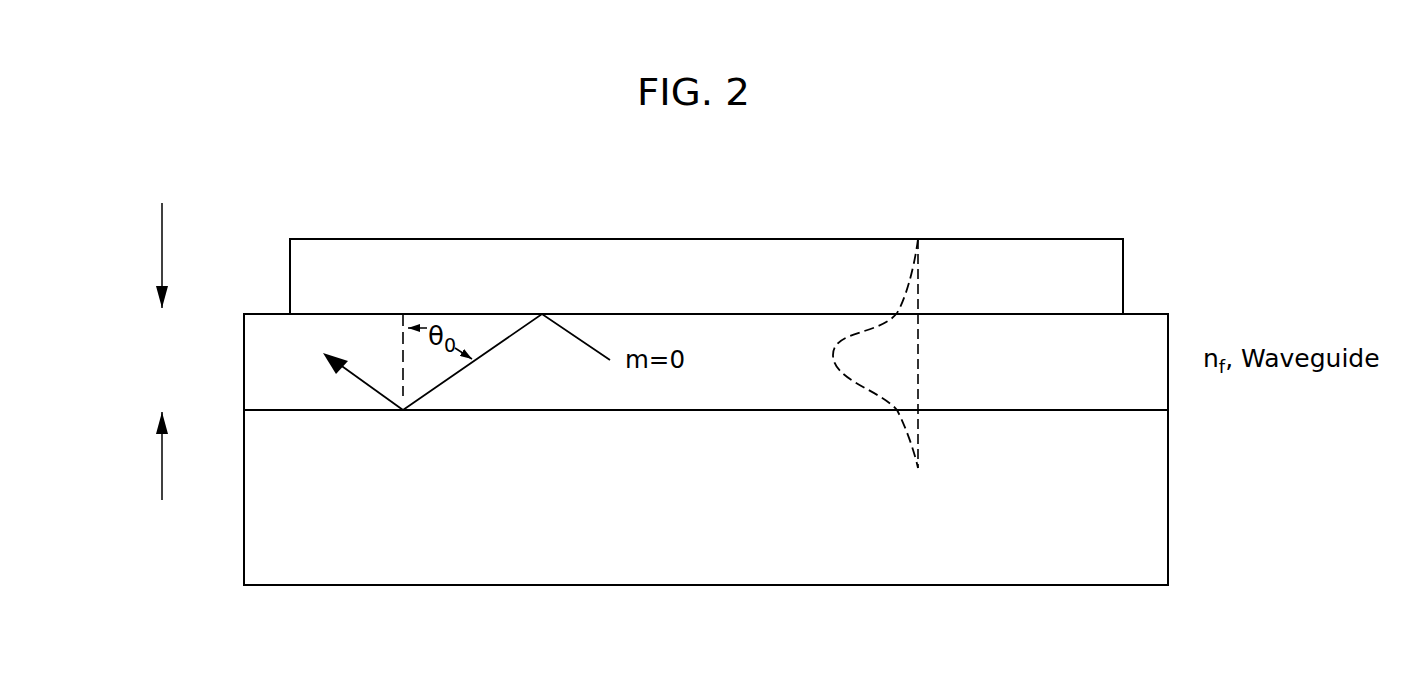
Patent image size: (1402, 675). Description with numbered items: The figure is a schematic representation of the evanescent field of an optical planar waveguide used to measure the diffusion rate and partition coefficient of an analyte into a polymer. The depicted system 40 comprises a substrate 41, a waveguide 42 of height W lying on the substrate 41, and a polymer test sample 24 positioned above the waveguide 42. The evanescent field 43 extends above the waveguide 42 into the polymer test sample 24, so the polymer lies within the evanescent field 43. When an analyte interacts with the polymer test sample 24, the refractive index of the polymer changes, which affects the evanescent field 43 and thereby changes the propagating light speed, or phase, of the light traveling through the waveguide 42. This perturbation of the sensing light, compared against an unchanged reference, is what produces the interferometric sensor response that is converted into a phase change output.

The polymer test sample 24 is at (632, 238).
The system 40 is at (1135, 123).
The substrate 41 is at (277, 505).
The waveguide 42 is at (138, 367).
The evanescent field 43 is at (905, 282).